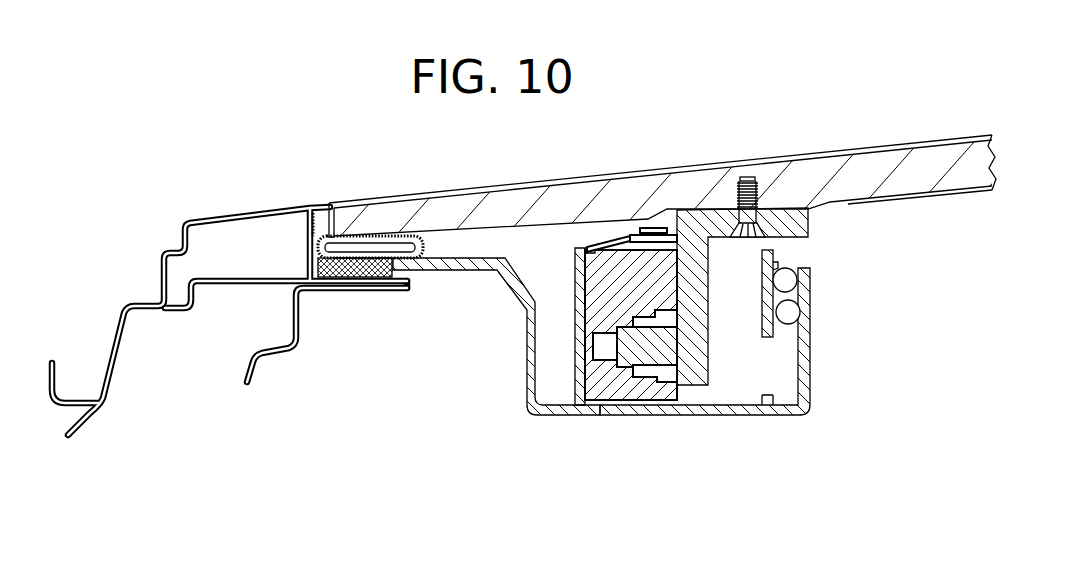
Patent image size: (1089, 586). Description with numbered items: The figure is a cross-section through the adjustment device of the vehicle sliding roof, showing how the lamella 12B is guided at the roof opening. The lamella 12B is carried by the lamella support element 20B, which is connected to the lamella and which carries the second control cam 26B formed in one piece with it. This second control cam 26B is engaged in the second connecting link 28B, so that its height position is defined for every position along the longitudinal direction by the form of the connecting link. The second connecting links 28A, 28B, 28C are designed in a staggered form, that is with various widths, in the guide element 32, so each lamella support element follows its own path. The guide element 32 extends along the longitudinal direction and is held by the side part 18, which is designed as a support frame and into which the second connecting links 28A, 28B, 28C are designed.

The lamella 12B is at (945, 173).
The side part 18 is at (523, 388).
The lamella support element 20B is at (693, 347).
The second control cam 26B is at (668, 350).
The second connecting link 28A is at (603, 335).
The second connecting link 28B is at (630, 325).
The second connecting link 28C is at (650, 328).
The guide element 32 is at (614, 392).